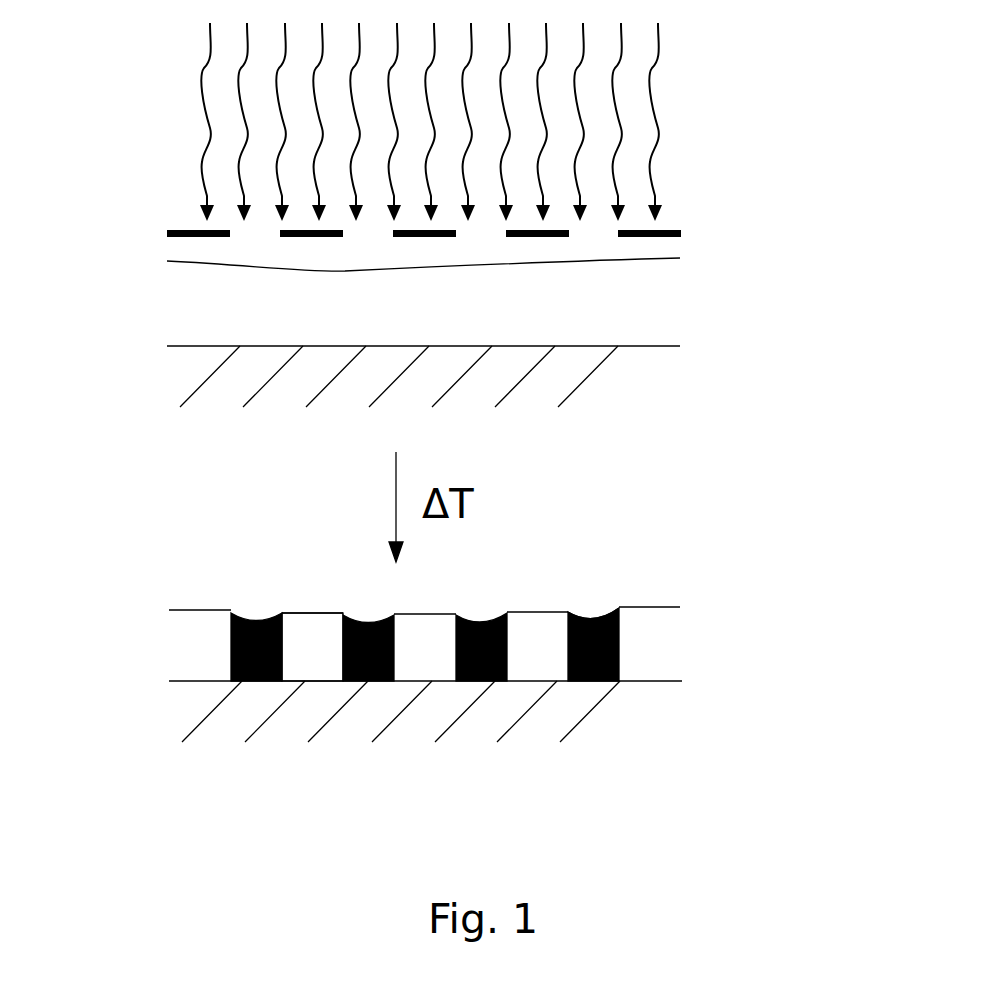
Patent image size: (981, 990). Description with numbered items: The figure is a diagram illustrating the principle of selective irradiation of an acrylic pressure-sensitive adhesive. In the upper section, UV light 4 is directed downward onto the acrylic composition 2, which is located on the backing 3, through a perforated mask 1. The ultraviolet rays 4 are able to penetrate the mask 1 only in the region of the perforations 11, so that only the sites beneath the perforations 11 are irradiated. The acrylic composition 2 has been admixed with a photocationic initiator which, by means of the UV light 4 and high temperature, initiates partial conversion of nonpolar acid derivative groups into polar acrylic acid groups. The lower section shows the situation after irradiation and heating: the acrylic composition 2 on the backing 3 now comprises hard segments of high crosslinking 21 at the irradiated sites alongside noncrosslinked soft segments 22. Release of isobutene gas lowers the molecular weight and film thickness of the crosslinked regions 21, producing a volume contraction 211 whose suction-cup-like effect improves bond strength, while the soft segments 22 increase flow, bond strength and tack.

The perforated mask 1 is at (730, 233).
The perforations 11 is at (250, 237).
The acrylic composition 2 is at (741, 309).
The hard segments of high crosslinking 21 is at (225, 653).
The noncrosslinked segments 22 is at (305, 608).
The volume contraction 211 is at (723, 553).
The backing 3 is at (737, 393).
The UV light 4 is at (727, 116).